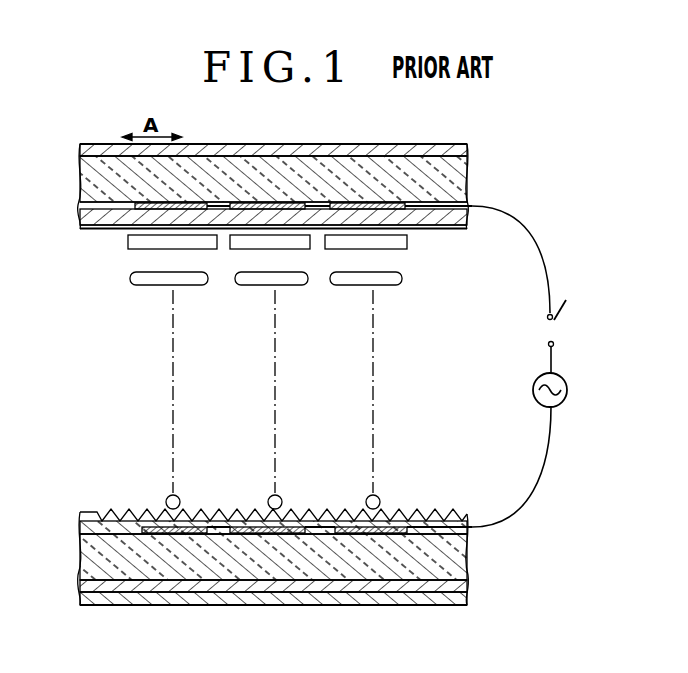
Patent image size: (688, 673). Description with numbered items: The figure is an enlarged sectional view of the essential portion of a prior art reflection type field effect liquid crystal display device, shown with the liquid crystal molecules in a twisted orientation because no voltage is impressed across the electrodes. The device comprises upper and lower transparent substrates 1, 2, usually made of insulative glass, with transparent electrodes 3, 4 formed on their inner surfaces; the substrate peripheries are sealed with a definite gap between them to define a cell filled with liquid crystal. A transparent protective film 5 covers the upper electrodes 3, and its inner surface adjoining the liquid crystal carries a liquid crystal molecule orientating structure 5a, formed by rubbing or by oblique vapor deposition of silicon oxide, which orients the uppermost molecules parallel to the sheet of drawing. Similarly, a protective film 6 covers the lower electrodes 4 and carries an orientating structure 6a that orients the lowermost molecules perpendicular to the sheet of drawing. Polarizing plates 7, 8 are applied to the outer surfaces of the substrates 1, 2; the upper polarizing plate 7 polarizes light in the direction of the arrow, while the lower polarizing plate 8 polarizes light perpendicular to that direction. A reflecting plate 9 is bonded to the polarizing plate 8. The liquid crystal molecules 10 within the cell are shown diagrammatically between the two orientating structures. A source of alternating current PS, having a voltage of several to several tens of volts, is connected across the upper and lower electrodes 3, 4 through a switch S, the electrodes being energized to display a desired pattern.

The upper transparent substrate 1 is at (82, 180).
The lower transparent substrate 2 is at (80, 560).
The upper transparent electrodes 3 is at (135, 208).
The lower transparent electrodes 4 is at (153, 527).
The upper protective film 5 is at (82, 215).
The liquid crystal molecule orientating structure of upper protective film 5a is at (85, 229).
The lower protective film 6 is at (80, 520).
The liquid crystal molecule orientating structure of lower protective film 6a is at (109, 513).
The upper polarizing plate 7 is at (80, 150).
The lower polarizing plate 8 is at (80, 587).
The reflecting plate 9 is at (107, 606).
The liquid crystal molecules 10 is at (395, 248).
The switch S is at (563, 336).
The source of alternating current PS is at (568, 390).